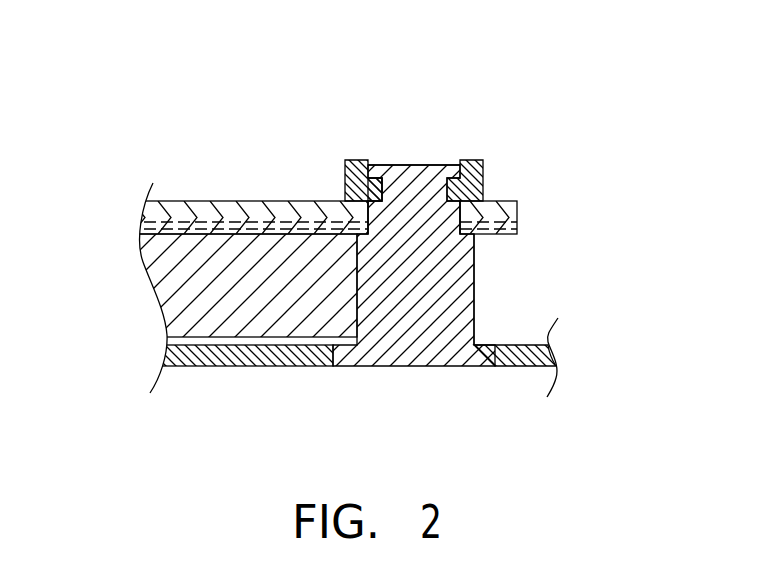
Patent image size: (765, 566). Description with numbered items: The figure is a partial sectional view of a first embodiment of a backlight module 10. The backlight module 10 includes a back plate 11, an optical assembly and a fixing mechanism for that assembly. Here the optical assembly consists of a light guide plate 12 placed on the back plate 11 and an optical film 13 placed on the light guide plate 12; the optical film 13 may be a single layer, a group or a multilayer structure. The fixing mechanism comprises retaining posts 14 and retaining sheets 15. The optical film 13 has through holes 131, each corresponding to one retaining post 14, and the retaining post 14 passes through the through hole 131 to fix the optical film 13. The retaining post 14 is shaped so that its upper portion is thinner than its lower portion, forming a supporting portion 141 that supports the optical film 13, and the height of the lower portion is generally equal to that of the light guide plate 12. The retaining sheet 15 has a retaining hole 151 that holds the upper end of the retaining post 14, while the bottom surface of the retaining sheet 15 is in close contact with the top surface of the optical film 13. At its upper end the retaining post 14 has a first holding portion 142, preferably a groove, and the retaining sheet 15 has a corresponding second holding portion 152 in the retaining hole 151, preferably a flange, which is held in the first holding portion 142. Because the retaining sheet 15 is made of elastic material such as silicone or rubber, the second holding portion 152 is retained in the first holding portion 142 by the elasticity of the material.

The backlight module 10 is at (598, 140).
The back plate 11 is at (222, 366).
The light guide plate 12 is at (160, 291).
The optical film 13 is at (150, 212).
The through hole 131 is at (374, 220).
The retaining post 14 is at (424, 367).
The supporting portion 141 is at (474, 259).
The first holding portion 142 is at (381, 191).
The retaining sheet 15 is at (485, 169).
The retaining hole 151 is at (412, 148).
The second holding portion 152 is at (471, 160).